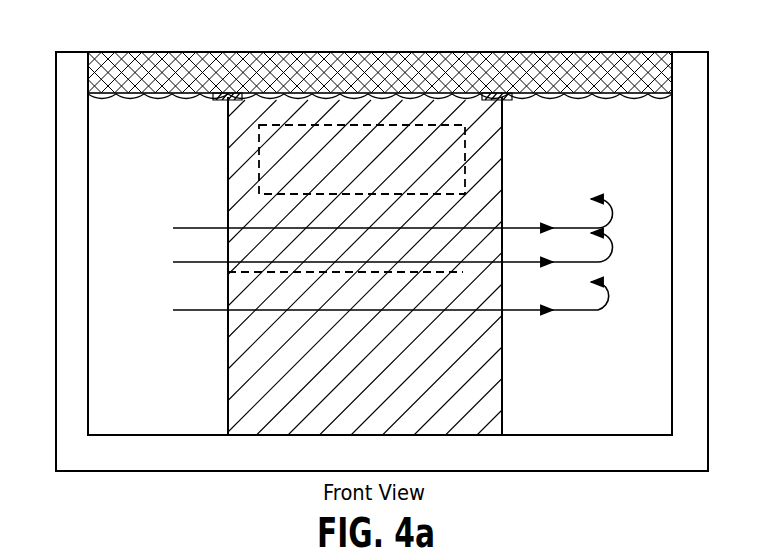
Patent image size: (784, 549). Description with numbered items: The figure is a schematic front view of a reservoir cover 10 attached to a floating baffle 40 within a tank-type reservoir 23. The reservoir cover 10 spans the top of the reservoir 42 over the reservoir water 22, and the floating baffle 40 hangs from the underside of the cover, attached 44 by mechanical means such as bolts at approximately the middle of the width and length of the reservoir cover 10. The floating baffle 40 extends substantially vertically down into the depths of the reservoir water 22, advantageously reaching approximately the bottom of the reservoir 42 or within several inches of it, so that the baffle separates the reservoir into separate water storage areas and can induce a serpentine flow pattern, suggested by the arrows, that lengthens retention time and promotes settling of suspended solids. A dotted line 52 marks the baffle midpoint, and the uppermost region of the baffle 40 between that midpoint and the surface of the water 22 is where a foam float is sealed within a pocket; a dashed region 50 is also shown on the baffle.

The reservoir cover 10 is at (510, 72).
The reservoir water 22 is at (173, 97).
The reservoir 23 is at (697, 68).
The floating baffle 40 is at (488, 197).
The reservoir 42 is at (540, 433).
The attachment 44 is at (221, 99).
The sensing region 50 is at (437, 155).
The baffle midpoint 52 is at (463, 272).